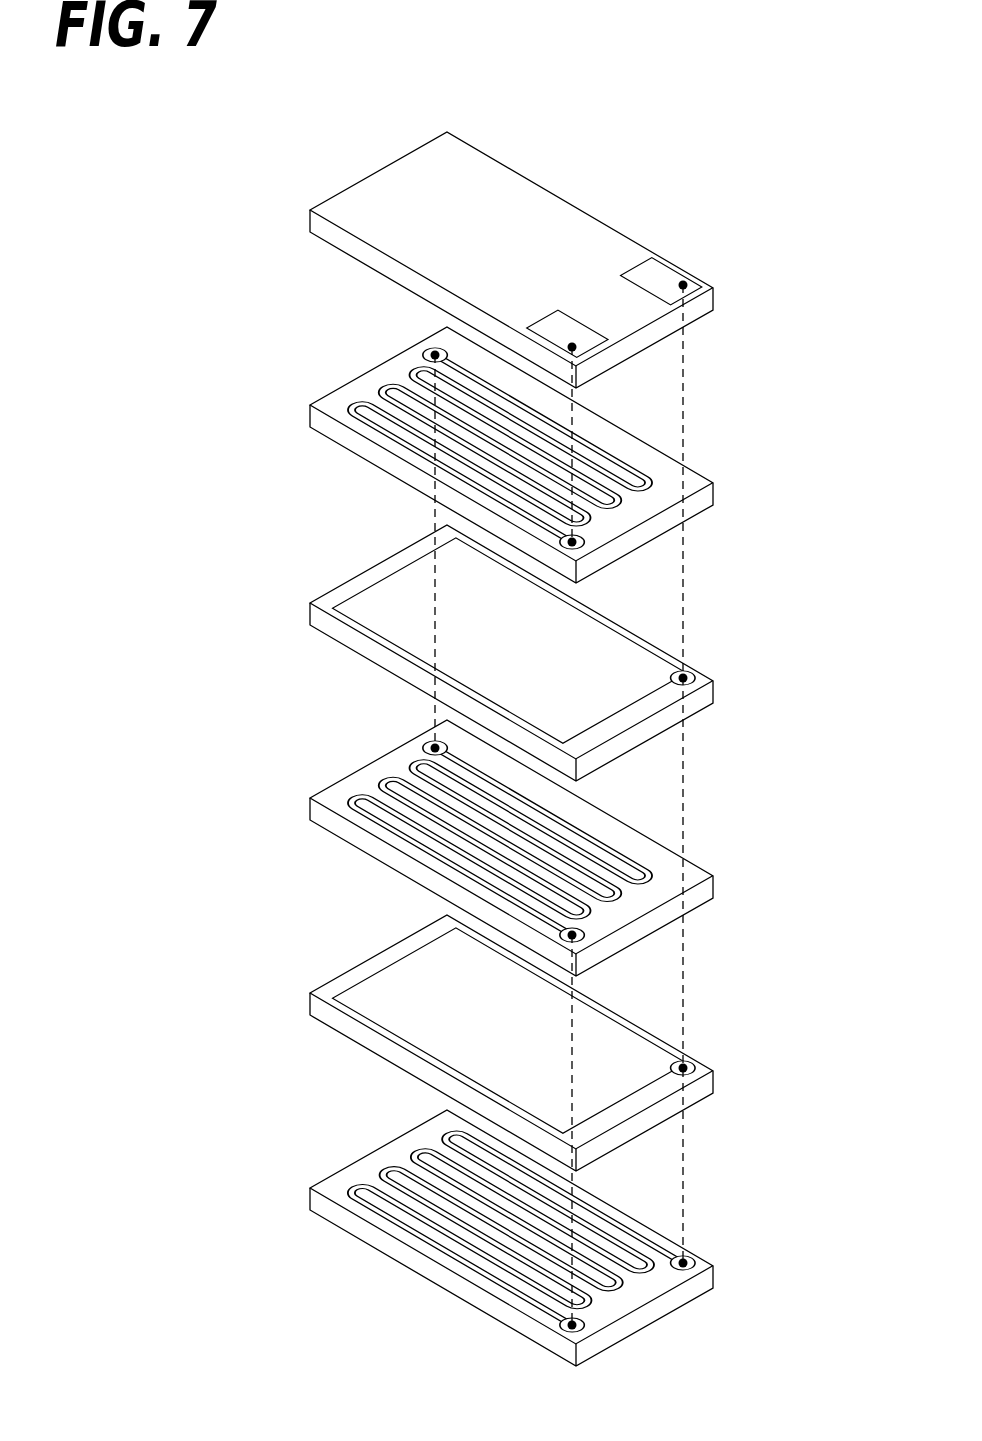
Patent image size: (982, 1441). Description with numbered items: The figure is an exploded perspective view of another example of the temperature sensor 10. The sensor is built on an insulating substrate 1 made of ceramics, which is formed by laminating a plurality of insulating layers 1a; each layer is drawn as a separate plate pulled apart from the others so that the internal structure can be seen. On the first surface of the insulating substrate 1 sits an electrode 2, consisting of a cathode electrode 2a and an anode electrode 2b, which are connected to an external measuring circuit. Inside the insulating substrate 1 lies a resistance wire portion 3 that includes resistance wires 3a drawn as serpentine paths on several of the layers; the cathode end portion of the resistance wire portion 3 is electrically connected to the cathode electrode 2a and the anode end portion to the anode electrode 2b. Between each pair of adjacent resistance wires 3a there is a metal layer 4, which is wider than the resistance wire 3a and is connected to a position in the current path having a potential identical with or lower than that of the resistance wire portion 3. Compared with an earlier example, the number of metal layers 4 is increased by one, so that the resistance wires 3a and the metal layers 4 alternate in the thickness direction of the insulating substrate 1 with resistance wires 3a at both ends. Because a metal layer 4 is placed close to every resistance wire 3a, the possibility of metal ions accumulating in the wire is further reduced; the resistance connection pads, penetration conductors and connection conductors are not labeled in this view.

The temperature sensor 10 is at (512, 730).
The insulating substrate 1 is at (431, 749).
The insulating layer 1a is at (343, 1217).
The electrode 2 is at (699, 284).
The cathode electrode 2a is at (663, 280).
The anode electrode 2b is at (565, 330).
The resistance wire portion 3 is at (599, 840).
The resistance wire 3a is at (620, 1290).
The metal layer 4 is at (602, 837).